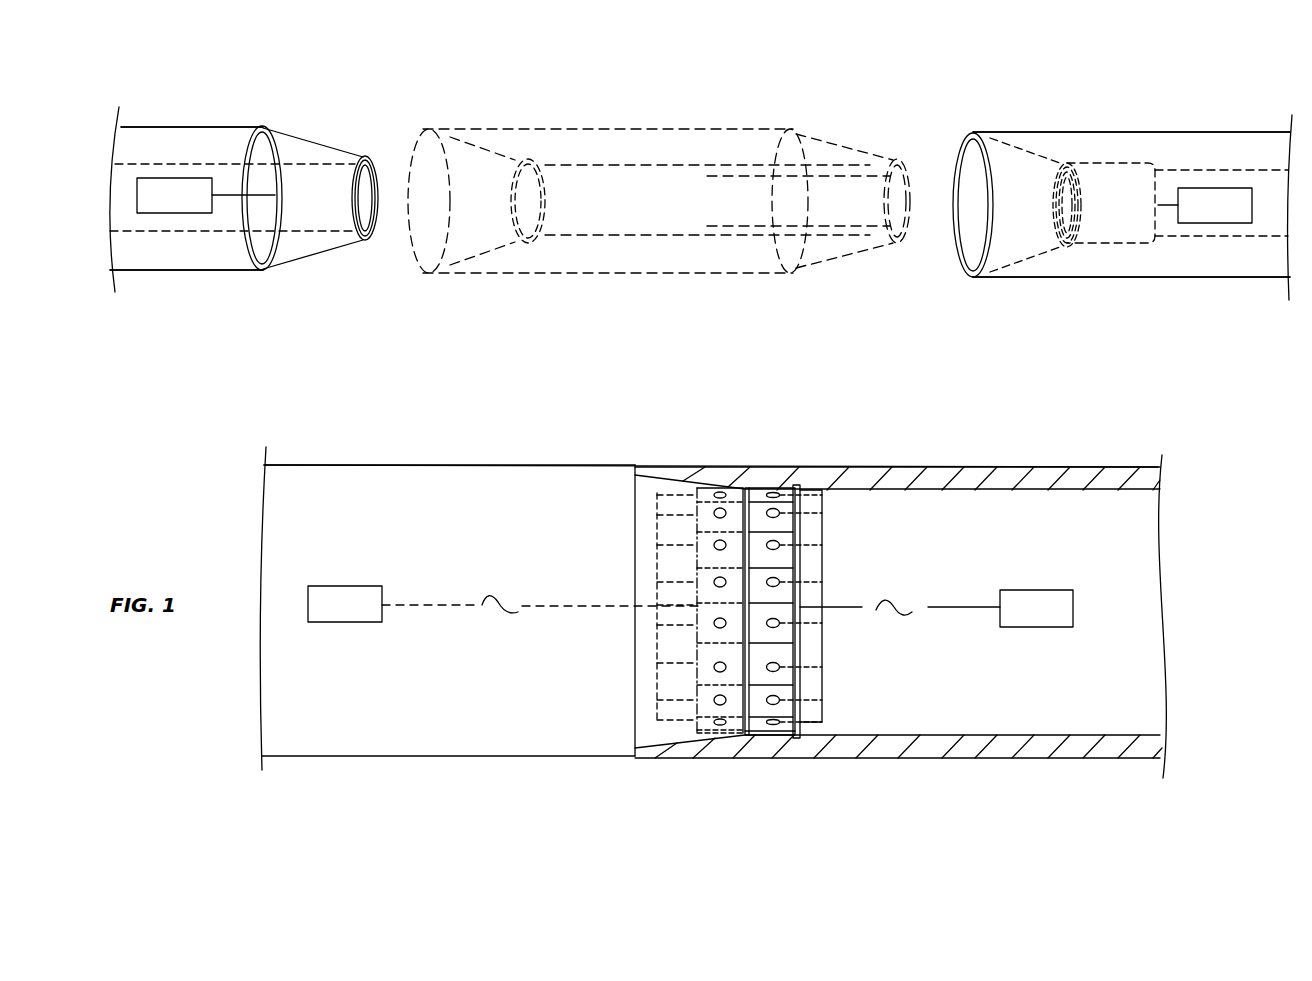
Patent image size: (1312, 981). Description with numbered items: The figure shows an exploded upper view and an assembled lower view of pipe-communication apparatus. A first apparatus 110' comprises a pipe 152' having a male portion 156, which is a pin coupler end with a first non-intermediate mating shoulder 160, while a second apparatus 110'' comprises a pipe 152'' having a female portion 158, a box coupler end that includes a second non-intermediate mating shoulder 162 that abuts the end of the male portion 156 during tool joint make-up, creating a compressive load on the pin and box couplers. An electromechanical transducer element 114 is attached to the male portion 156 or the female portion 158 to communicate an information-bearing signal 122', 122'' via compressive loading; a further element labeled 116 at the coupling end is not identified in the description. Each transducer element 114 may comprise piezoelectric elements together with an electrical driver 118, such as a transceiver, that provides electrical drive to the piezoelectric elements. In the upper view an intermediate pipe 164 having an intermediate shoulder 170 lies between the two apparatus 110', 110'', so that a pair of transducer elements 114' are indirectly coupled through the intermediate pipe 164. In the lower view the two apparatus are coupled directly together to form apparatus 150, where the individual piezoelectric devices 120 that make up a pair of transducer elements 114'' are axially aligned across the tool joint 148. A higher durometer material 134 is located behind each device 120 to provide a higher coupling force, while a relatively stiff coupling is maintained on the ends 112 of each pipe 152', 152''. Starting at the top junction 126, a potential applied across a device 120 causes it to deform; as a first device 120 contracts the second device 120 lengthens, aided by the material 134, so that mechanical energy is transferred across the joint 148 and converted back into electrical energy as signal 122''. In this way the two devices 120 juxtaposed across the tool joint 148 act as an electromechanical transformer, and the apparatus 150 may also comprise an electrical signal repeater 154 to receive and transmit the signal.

The apparatus 110' is at (372, 409).
The apparatus 110'' is at (963, 419).
The pipe end 112 is at (367, 155).
The electromechanical transducer element 114 is at (1037, 205).
The electromechanical transducer element 114' is at (403, 235).
The electromechanical transducer element 114'' is at (756, 573).
The insert 116 is at (528, 160).
The electrical driver 118 is at (190, 178).
The piezoelectric device 120 is at (703, 574).
The information-bearing signal 122' is at (541, 588).
The information-bearing signal 122'' is at (900, 594).
The top junction 126 is at (713, 622).
The higher durometer material 134 is at (700, 734).
The tool joint 148 is at (634, 464).
The apparatus 150 is at (1065, 775).
The pipe 152' is at (186, 220).
The pipe 152'' is at (1131, 224).
The electrical signal repeater 154 is at (1050, 590).
The male portion 156 is at (316, 256).
The female portion 158 is at (1053, 160).
The first non-intermediate mating shoulder 160 is at (265, 272).
The second non-intermediate mating shoulder 162 is at (1056, 222).
The intermediate pipe 164 is at (645, 130).
The intermediate shoulder 170 is at (707, 172).